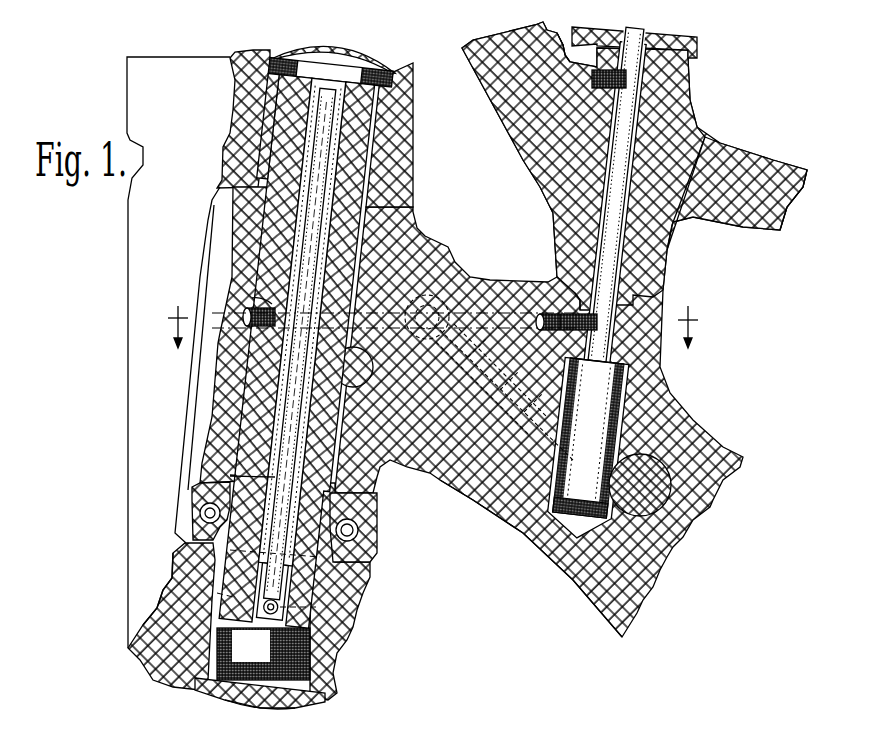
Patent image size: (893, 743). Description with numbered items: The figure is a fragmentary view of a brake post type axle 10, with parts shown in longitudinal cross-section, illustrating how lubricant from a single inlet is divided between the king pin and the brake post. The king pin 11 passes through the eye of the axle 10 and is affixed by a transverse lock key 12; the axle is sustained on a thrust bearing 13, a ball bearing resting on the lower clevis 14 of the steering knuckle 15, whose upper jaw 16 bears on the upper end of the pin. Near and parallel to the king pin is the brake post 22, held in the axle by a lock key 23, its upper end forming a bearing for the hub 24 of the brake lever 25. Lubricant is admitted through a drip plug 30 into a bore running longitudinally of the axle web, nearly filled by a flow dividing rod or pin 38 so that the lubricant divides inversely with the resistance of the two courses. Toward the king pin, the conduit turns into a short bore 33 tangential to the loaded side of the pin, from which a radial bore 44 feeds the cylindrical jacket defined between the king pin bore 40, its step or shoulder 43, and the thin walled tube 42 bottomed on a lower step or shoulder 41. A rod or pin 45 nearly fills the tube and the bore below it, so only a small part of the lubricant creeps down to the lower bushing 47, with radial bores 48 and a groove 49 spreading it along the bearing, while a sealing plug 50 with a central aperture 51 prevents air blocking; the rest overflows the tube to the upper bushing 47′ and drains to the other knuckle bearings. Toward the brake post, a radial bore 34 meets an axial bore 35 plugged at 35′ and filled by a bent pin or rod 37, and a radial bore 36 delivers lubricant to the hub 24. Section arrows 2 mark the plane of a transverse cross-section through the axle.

The section line 2- 2 is at (433, 327).
The axle 10 is at (475, 493).
The king pin 11 is at (217, 365).
The transverse lock key 12 is at (430, 252).
The thrust bearing 13 is at (352, 551).
The lower clevis 14 is at (150, 660).
The steering knuckle 15 is at (127, 258).
The upper jaw 16 is at (247, 67).
The brake post 22 is at (640, 260).
The lock key 23 is at (663, 507).
The hub 24 is at (683, 127).
The brake lever 25 is at (753, 157).
The drip plug 30 is at (462, 274).
The short bore 33 is at (221, 303).
The radial bore 34 is at (588, 287).
The axial bore 35 is at (633, 73).
The plug 35′ is at (638, 34).
The radial bore 36 is at (563, 47).
The pin or rod 37 is at (613, 208).
The rod or pin 38 is at (533, 293).
The axial bore 40 is at (230, 476).
The step or shoulder 41 is at (280, 383).
The thin walled tube 42 is at (340, 158).
The step or shoulder 43 is at (287, 327).
The radial bore 44 is at (267, 300).
The rod or pin 45 is at (246, 354).
The lower bushing 47 is at (274, 376).
The upper king pin bushing 47′ is at (384, 112).
The radial bores 48 is at (263, 654).
The groove 49 is at (173, 587).
The sealing plug 50 is at (305, 702).
The central aperture 51 is at (258, 705).